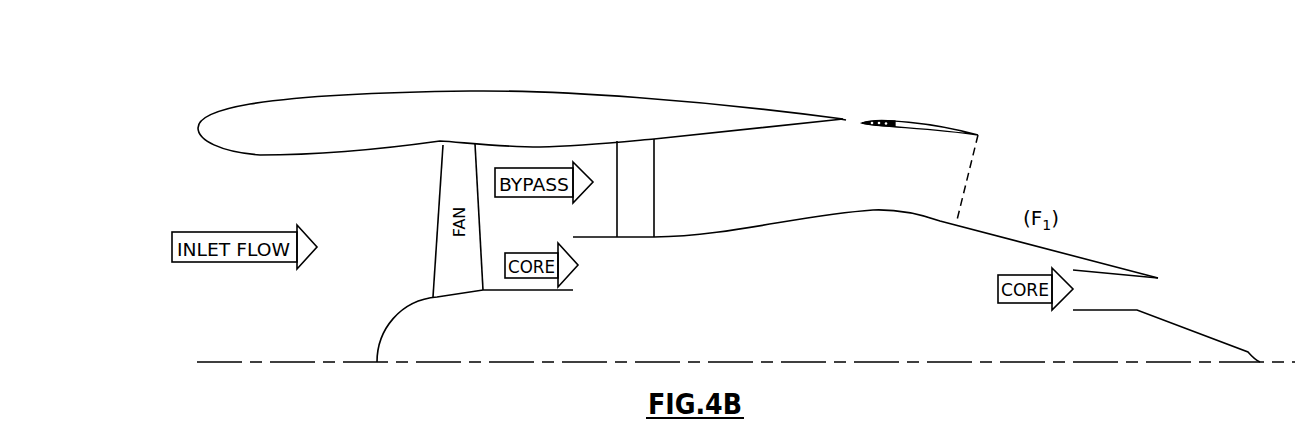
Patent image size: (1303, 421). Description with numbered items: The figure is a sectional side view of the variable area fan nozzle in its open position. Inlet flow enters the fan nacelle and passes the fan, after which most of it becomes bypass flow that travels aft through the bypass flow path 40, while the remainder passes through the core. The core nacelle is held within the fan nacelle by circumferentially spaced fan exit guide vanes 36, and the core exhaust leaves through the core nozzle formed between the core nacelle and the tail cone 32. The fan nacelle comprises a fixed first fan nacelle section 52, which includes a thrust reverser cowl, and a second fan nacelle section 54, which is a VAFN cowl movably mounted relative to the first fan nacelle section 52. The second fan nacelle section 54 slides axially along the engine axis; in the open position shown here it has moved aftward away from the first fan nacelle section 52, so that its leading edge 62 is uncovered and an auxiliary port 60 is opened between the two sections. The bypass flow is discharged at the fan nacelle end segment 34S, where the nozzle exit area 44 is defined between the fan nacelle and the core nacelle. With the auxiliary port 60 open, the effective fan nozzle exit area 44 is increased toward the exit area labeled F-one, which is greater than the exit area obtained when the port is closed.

The first fan nacelle section 52 is at (790, 90).
The fan exit guide vanes 36 is at (654, 188).
The bypass flow path 40 is at (764, 214).
The tail cone 32 is at (1203, 335).
The second fan nacelle section 54 is at (945, 97).
The airfoil leading edge region 62 is at (885, 102).
The fan nacelle end segment 34S is at (978, 135).
The fan nozzle exit area 44 is at (983, 192).
The auxiliary port 60 is at (848, 126).